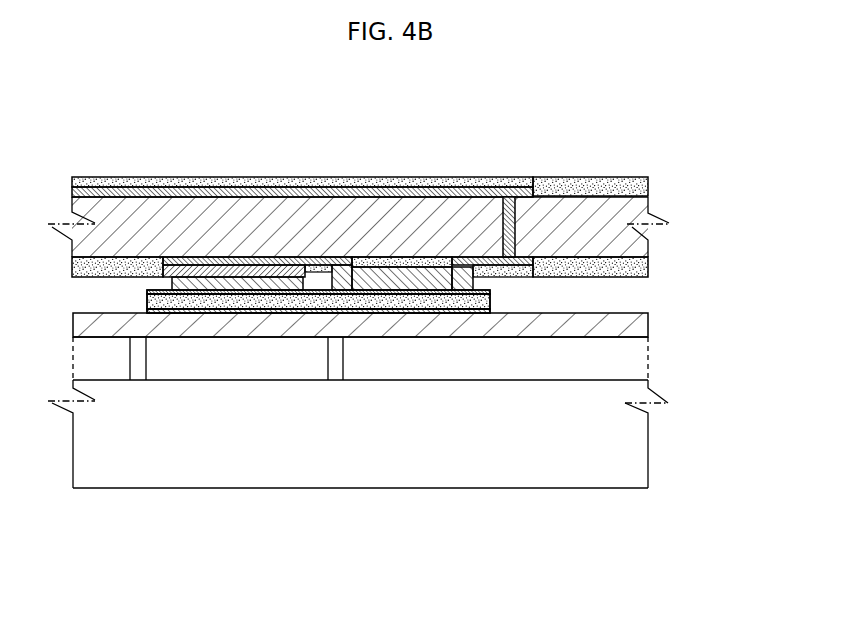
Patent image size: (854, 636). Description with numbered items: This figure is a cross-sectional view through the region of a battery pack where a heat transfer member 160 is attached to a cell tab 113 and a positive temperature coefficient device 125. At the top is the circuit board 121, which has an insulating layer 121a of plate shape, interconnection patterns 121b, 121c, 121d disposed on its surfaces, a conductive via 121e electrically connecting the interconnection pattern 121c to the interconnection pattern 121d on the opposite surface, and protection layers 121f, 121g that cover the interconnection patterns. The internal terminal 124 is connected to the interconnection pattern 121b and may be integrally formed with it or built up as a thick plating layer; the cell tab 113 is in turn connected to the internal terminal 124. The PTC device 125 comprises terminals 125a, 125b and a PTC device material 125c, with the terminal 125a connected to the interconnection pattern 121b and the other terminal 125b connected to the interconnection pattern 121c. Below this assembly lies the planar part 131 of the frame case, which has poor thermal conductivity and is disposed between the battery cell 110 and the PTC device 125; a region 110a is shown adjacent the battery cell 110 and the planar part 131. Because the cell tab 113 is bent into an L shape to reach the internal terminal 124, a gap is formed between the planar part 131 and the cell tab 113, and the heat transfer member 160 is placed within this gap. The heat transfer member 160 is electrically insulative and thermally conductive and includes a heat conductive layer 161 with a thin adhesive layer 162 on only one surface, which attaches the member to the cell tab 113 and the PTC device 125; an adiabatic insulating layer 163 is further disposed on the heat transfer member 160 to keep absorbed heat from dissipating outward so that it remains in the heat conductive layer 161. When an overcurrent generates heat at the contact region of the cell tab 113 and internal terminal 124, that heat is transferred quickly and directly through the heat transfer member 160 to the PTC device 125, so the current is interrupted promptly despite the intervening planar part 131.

The battery cell 110 is at (625, 453).
The pixel defining layer / spacer region 110a is at (587, 378).
The cell tab 113 is at (166, 281).
The circuit board 121 is at (401, 203).
The insulating layer 121a is at (80, 208).
The interconnection pattern 121b is at (273, 255).
The interconnection pattern 121c is at (452, 261).
The interconnection pattern 121d is at (356, 184).
The conductive via 121e is at (505, 206).
The protection layer 121f is at (645, 267).
The protection layer 121g is at (602, 184).
The internal terminal 124 is at (200, 270).
The PTC device 125 is at (320, 450).
The terminal 125a is at (342, 312).
The terminal 125b is at (449, 295).
The PTC device material 125c is at (394, 302).
The planar part 131 is at (645, 322).
The heat transfer member 160 is at (318, 444).
The heat conductive layer 161 is at (250, 312).
The adhesive layer 162 is at (152, 293).
The adiabatic insulating layer 163 is at (205, 305).